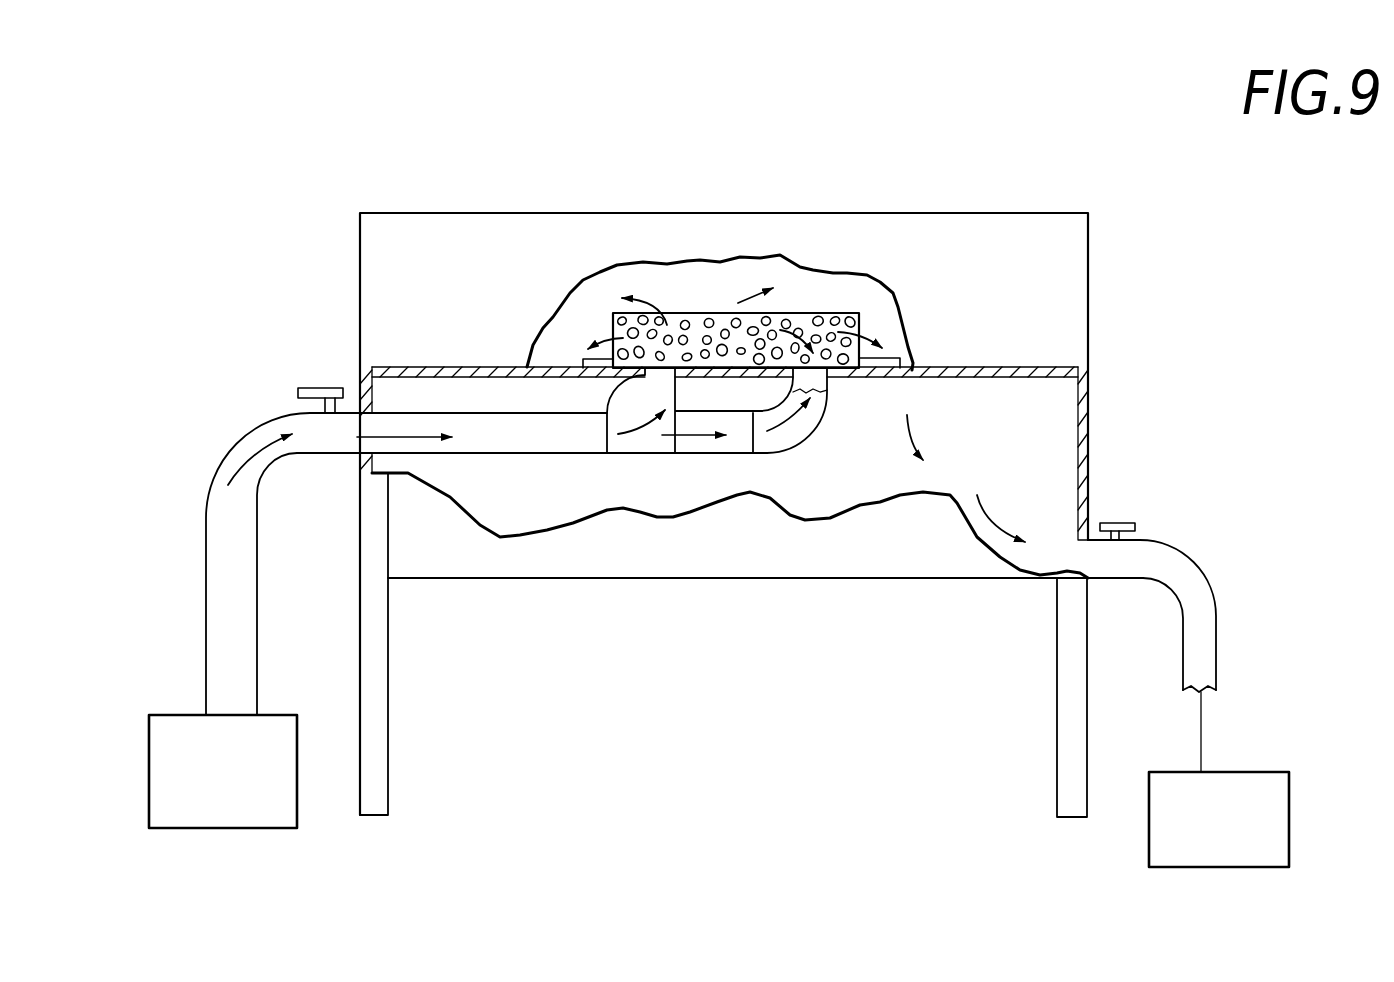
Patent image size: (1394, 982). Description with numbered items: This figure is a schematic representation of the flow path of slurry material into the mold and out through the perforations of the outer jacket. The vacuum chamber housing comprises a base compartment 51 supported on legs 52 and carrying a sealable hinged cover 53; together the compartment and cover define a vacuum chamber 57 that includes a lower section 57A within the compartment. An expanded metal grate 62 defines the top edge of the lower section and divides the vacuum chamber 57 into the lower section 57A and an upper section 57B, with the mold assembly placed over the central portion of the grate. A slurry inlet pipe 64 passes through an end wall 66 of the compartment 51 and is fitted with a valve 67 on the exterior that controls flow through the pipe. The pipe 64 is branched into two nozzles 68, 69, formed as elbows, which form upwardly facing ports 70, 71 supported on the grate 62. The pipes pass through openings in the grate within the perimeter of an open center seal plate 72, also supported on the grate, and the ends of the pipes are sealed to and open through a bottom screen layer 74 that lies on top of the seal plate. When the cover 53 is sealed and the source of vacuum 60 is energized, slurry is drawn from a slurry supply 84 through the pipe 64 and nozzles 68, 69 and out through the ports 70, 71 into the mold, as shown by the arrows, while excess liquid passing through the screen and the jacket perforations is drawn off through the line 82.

The base compartment 51 is at (645, 580).
The legs 52 is at (390, 781).
The sealable hinged cover 53 is at (388, 225).
The vacuum chamber 57 is at (900, 470).
The lower section of vacuum chamber 57A is at (1042, 415).
The upper section of vacuum chamber 57B is at (795, 280).
The source of vacuum 60 is at (1148, 838).
The expanded metal grate 62 is at (1060, 367).
The slurry inlet pipe 64 is at (513, 458).
The end wall 66 is at (358, 457).
The valve 67 is at (313, 388).
The nozzle 68 is at (646, 391).
The nozzle 69 is at (828, 402).
The port 70 is at (673, 378).
The port 71 is at (820, 372).
The open center seal plate 72 is at (923, 370).
The bottom screen layer 74 is at (908, 368).
The line 82 is at (1183, 573).
The slurry supply 84 is at (233, 828).